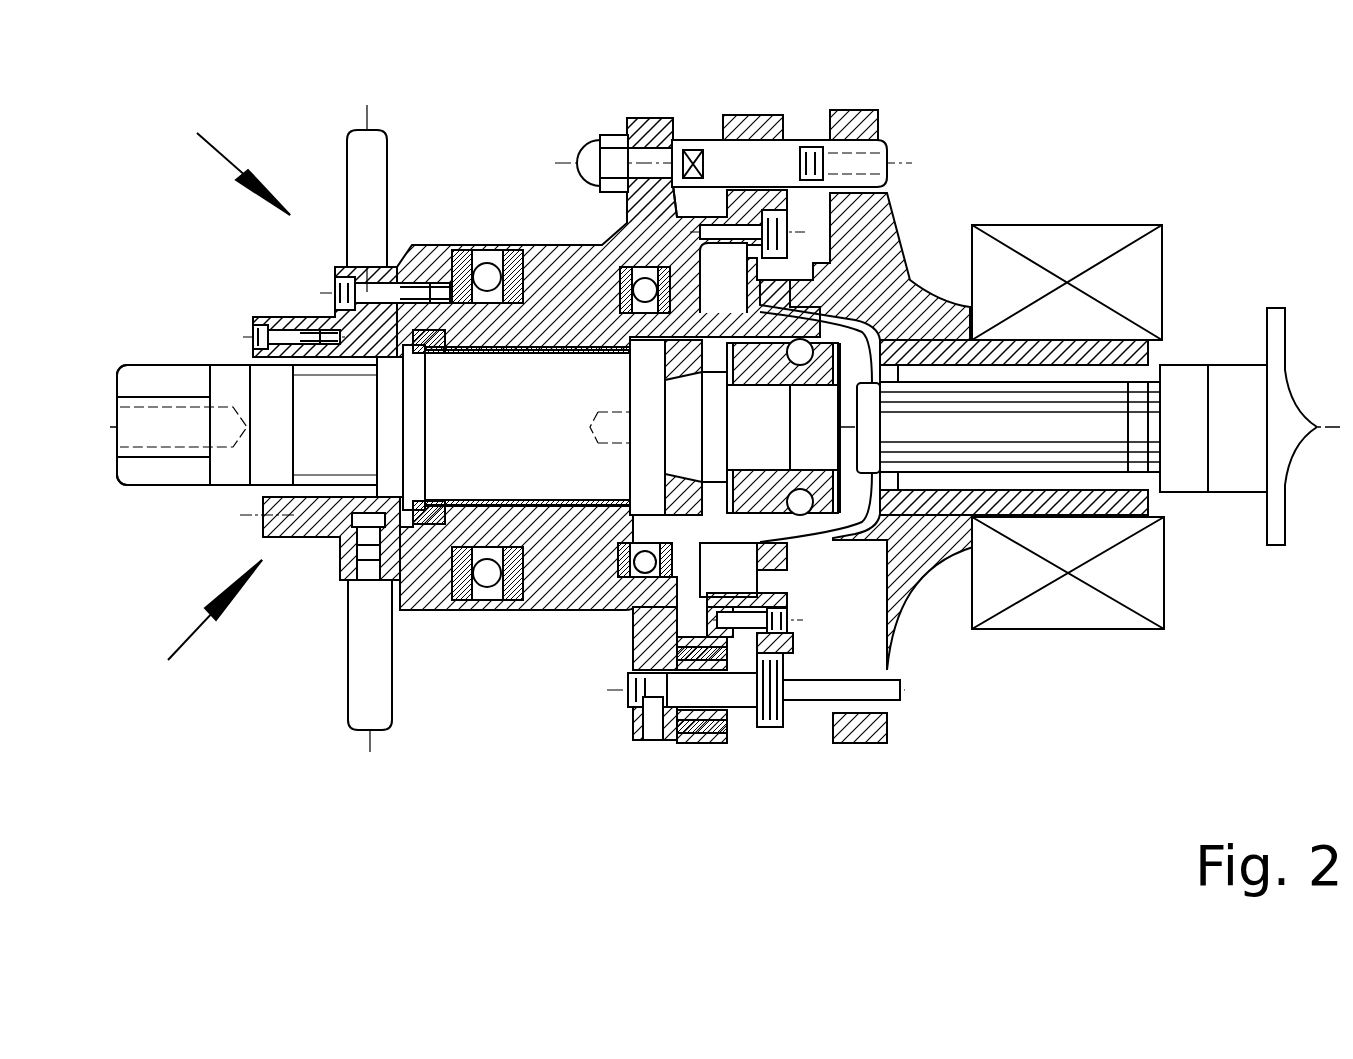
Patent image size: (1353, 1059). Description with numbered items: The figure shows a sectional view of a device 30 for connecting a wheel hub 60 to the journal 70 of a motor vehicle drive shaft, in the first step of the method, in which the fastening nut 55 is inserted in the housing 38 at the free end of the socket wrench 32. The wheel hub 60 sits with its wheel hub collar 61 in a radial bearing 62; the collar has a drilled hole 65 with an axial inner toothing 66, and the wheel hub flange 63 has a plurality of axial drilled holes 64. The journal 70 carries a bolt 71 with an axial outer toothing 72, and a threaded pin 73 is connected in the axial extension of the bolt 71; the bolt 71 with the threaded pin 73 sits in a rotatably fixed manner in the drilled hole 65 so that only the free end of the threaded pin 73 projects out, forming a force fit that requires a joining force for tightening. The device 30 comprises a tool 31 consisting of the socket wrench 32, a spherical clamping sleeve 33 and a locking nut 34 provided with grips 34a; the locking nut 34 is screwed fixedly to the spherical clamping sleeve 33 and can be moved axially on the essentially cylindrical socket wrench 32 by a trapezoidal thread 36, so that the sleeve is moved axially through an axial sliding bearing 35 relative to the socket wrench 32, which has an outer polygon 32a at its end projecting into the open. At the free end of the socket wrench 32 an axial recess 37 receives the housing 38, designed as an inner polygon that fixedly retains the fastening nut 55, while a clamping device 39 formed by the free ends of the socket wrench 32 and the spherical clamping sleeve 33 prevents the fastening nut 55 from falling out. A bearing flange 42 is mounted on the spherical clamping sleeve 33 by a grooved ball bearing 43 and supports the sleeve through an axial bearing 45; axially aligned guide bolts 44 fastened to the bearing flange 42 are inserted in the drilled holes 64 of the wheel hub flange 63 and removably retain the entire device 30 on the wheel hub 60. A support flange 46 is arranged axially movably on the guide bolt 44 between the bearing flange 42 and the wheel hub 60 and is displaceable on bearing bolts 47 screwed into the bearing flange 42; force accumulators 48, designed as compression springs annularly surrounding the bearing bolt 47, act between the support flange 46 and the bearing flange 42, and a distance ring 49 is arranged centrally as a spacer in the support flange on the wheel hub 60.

The device 30 is at (226, 155).
The tool 31 is at (197, 631).
The socket wrench 32 is at (228, 465).
The outer polygon 32a is at (140, 470).
The spherical clamping sleeve 33 is at (440, 607).
The locking nut 34 is at (330, 532).
The grips 34a is at (357, 158).
The axial sliding bearing 35 is at (573, 463).
The trapezoidal thread 36 is at (338, 535).
The axial recess 37 is at (485, 263).
The housing 38 is at (735, 320).
The clamping device 39 is at (805, 545).
The bearing flange 42 is at (647, 140).
The grooved ball bearing 43 is at (630, 300).
The guide bolts 44 is at (792, 158).
The axial bearing 45 is at (470, 247).
The support flange 46 is at (753, 115).
The bearing bolts 47 is at (730, 747).
The force accumulators 48 is at (693, 745).
The distance ring 49 is at (797, 645).
The fastening nut 55 is at (785, 467).
The wheel hub 60 is at (927, 323).
The wheel hub collar 61 is at (1137, 356).
The radial bearing 62 is at (1068, 248).
The wheel hub flange 63 is at (850, 123).
The axial drilled holes 64 is at (873, 703).
The drilled hole 65 is at (898, 367).
The axial inner toothing 66 is at (963, 370).
The journal 70 is at (1290, 355).
The bolt 71 is at (1185, 472).
The axial outer toothing 72 is at (1080, 457).
The threaded pin 73 is at (873, 453).